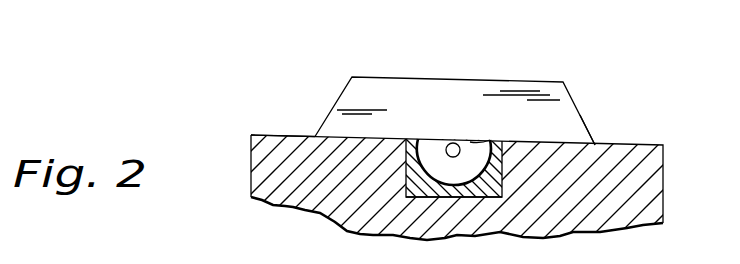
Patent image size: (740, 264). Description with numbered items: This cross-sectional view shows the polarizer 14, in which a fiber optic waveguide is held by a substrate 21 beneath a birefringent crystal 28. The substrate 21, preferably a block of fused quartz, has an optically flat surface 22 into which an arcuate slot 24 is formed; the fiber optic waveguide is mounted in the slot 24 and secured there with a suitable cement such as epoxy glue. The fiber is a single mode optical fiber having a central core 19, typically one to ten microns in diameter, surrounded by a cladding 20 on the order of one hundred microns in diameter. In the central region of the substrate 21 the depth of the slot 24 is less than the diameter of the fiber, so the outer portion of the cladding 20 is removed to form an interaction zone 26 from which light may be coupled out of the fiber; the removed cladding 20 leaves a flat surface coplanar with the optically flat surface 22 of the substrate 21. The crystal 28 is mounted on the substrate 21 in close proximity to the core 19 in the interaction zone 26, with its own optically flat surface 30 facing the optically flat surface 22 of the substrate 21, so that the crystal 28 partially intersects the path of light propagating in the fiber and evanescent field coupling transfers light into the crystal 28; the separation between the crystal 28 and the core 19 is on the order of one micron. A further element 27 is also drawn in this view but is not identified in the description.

The polarizer 14 is at (312, 88).
The optically flat surface 22 is at (282, 134).
The semicircular bearing member 27 is at (432, 137).
The interaction zone 26 is at (453, 136).
The central core 19 is at (468, 145).
The crystal 28 is at (577, 102).
The cladding 20 is at (503, 155).
The optically flat surface 30 is at (427, 146).
The arcuate slot 24 is at (476, 197).
The substrate 21 is at (296, 195).